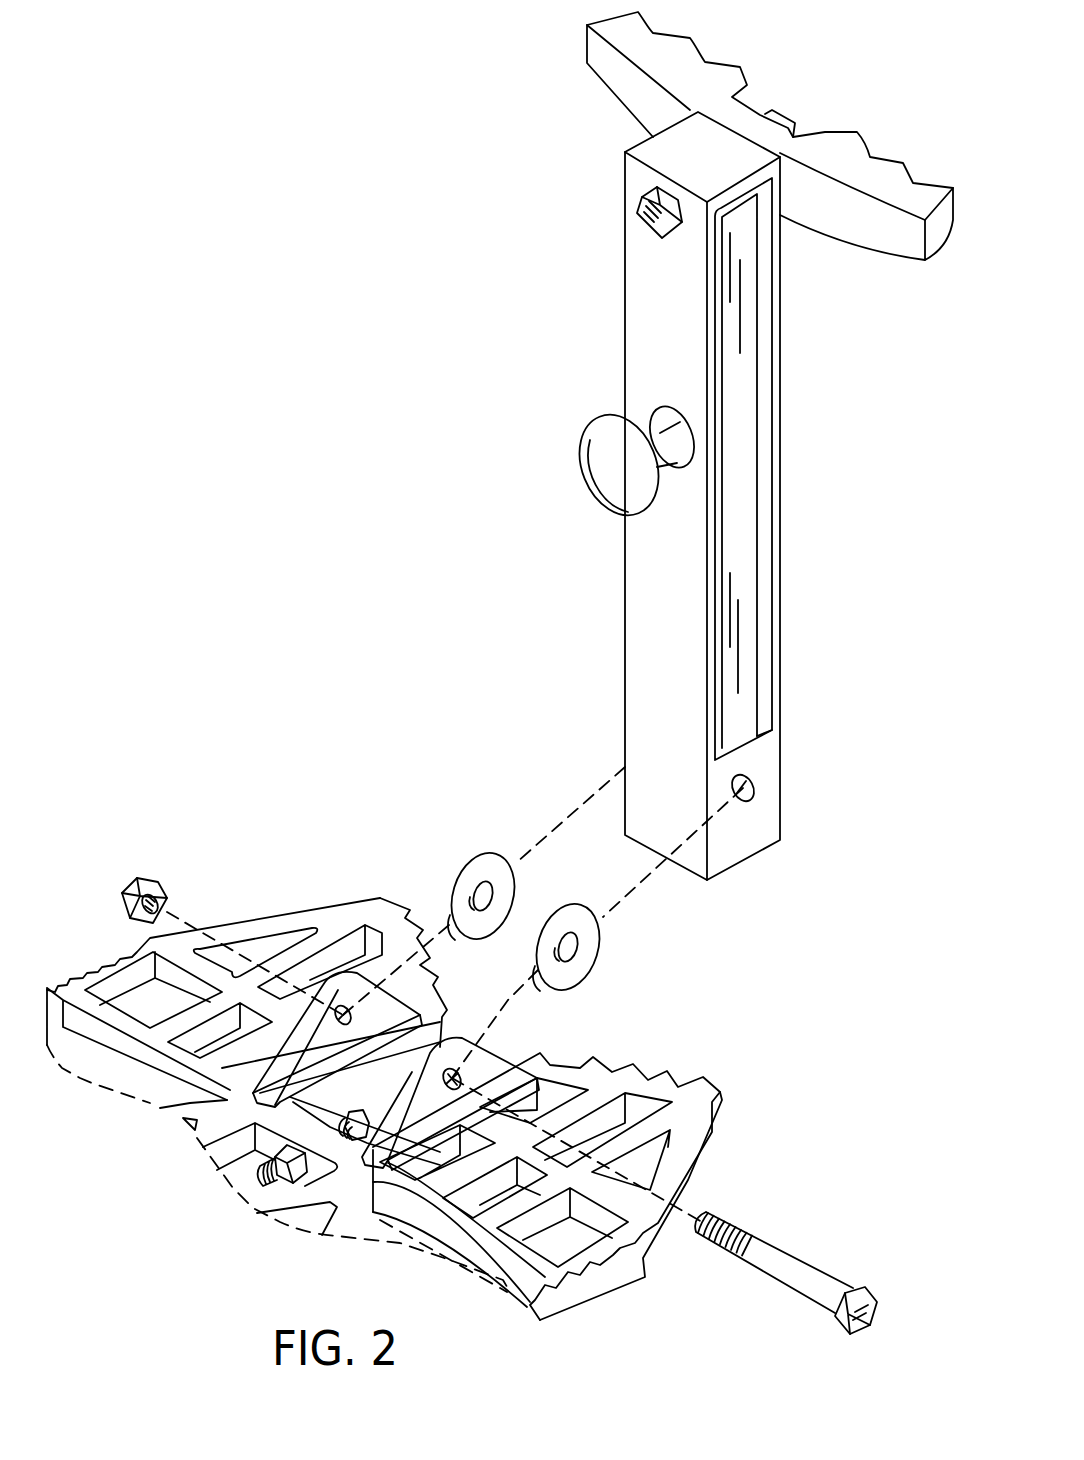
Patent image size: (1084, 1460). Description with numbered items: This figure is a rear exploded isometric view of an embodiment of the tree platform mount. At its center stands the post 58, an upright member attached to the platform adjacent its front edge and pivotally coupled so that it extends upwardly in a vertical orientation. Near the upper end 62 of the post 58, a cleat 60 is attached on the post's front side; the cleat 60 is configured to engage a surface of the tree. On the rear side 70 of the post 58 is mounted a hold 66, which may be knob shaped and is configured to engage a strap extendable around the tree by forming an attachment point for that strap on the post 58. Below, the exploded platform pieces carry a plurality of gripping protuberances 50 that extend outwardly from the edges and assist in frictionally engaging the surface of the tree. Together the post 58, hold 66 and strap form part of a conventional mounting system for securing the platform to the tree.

The gripping protuberances 50 is at (670, 1068).
The post 58 is at (733, 573).
The cleat 60 is at (853, 220).
The upper end 62 is at (700, 147).
The hold 66 is at (590, 485).
The rear side 70 is at (701, 449).